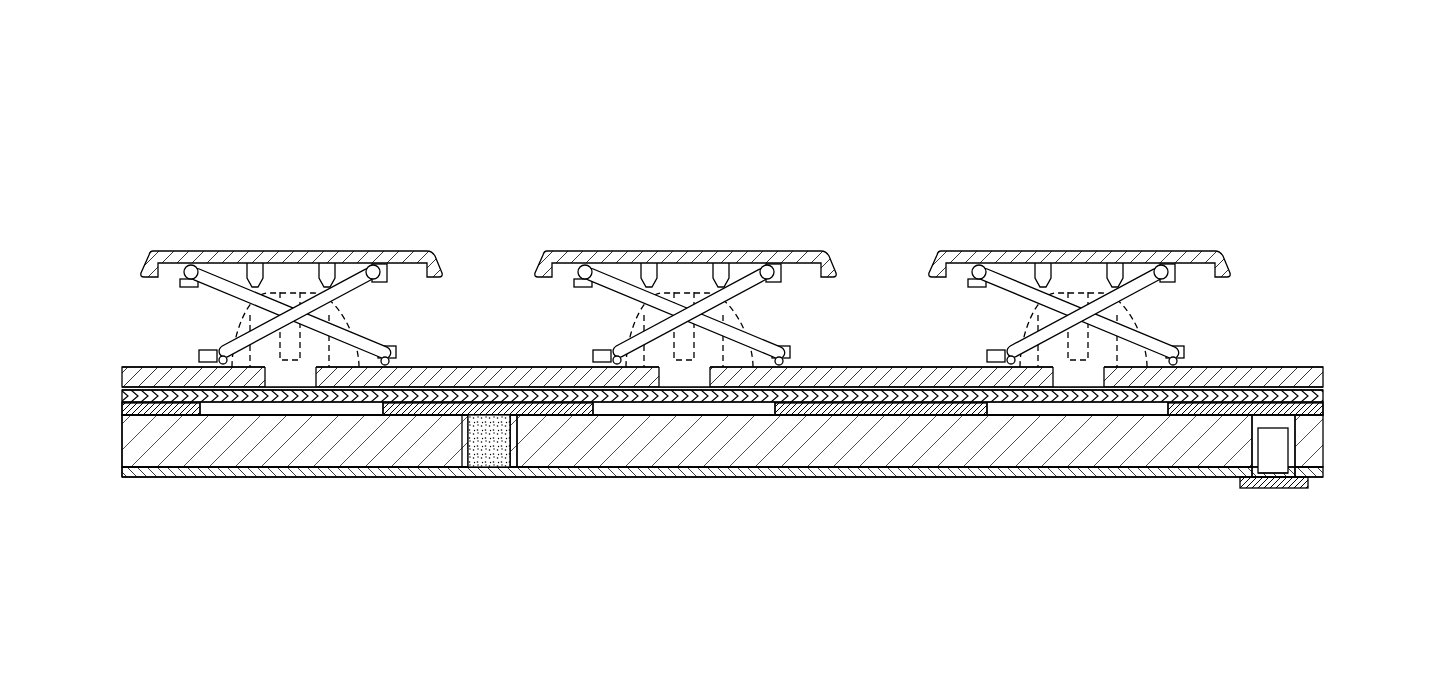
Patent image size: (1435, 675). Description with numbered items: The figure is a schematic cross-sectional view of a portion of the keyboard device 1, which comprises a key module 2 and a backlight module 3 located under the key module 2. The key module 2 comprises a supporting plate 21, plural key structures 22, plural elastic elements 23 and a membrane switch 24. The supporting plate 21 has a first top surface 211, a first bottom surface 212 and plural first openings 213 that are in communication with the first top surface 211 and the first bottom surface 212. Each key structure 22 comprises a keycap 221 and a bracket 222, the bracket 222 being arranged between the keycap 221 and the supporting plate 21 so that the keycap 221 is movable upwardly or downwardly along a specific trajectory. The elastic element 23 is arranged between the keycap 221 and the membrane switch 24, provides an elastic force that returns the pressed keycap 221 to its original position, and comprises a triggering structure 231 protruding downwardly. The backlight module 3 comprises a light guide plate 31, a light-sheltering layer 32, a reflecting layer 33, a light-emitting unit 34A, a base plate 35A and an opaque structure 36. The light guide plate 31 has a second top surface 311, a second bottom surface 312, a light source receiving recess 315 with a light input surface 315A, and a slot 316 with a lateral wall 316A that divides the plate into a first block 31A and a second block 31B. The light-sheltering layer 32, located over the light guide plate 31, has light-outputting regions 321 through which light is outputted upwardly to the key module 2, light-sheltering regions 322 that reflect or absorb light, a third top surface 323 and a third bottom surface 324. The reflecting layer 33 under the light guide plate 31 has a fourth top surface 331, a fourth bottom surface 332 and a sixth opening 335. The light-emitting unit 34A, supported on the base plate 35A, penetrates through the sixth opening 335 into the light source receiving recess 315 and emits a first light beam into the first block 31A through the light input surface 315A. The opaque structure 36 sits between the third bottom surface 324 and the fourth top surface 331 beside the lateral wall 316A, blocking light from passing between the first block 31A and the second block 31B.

The keyboard device 1 is at (1388, 255).
The key module 2 is at (213, 48).
The supporting plate 21 is at (197, 377).
The first top surface 211 is at (1195, 366).
The first bottom surface 212 is at (1303, 393).
The first openings 213 is at (1093, 363).
The key structures 22 is at (464, 145).
The keycap 221 is at (1208, 223).
The bracket 222 is at (1134, 287).
The elastic element 23 is at (1063, 280).
The triggering structure 231 is at (1023, 352).
The membrane switch 24 is at (1283, 350).
The backlight module 3 is at (602, 8).
The light guide plate 31 is at (719, 212).
The second top surface 311 is at (822, 395).
The second bottom surface 312 is at (878, 490).
The light source receiving recess 315 is at (1338, 422).
The light input surface 315A is at (1297, 427).
The slot 316 is at (597, 527).
The lateral wall 316A is at (517, 427).
The first block 31A is at (683, 497).
The second block 31B is at (245, 495).
The light-sheltering layer 32 is at (98, 375).
The light-outputting regions 321 is at (782, 497).
The light-sheltering regions 322 is at (952, 497).
The third top surface 323 is at (903, 413).
The third bottom surface 324 is at (1048, 490).
The reflecting layer 33 is at (307, 503).
The fourth top surface 331 is at (102, 464).
The fourth bottom surface 332 is at (165, 512).
The sixth opening 335 is at (1217, 517).
The light-emitting unit 34A is at (1265, 545).
The base plate 35A is at (1310, 517).
The opaque structure 36 is at (427, 490).